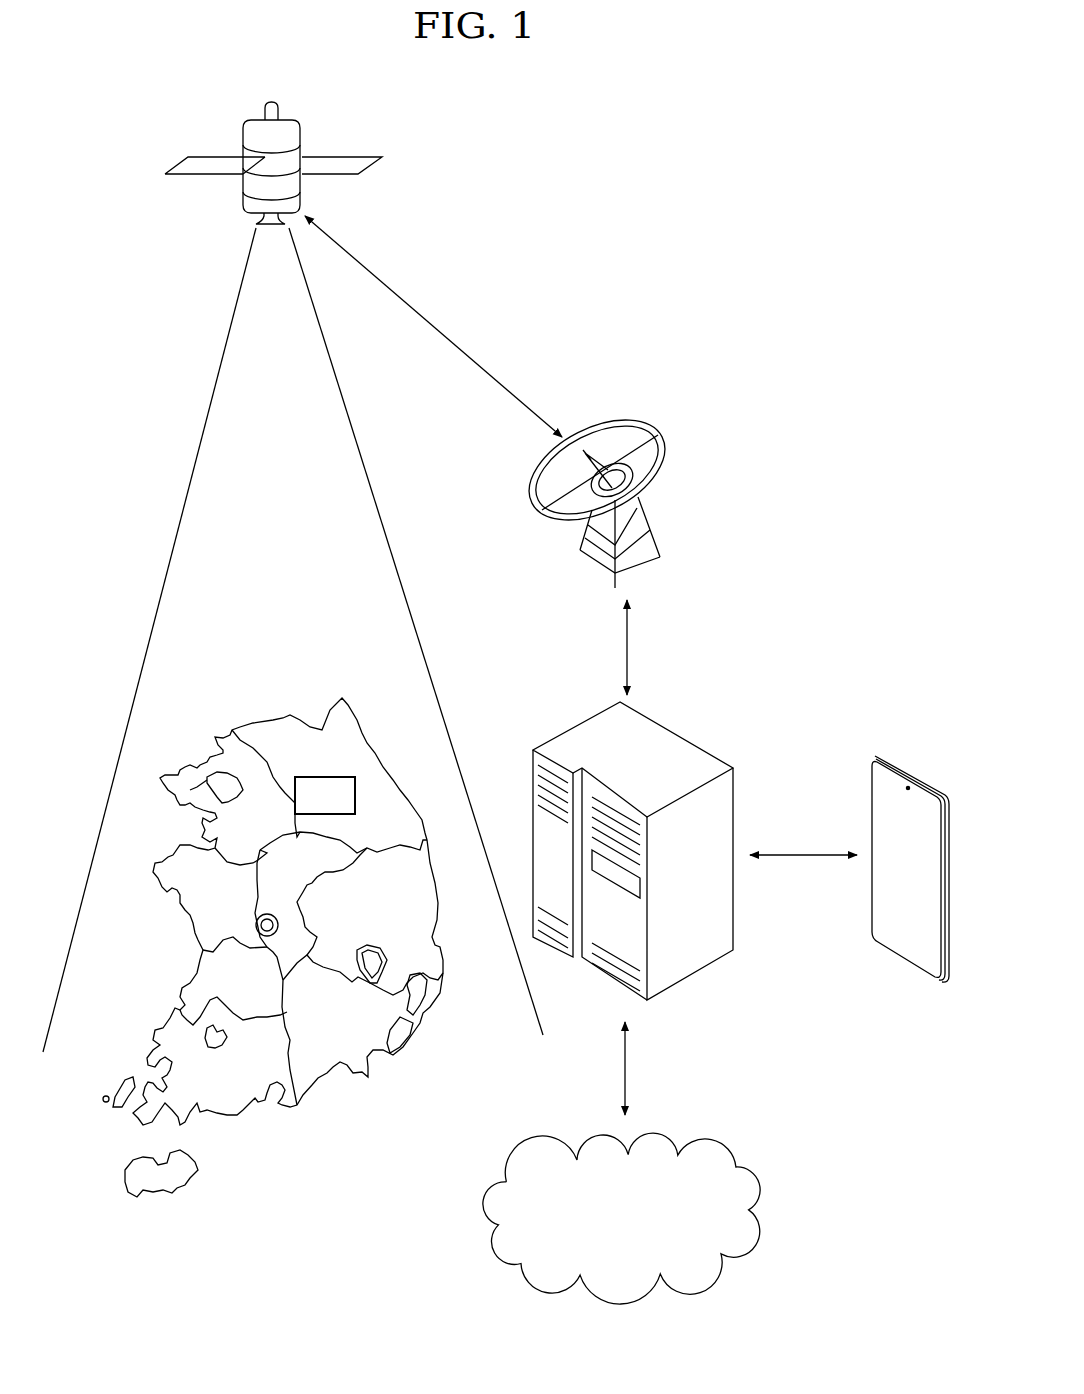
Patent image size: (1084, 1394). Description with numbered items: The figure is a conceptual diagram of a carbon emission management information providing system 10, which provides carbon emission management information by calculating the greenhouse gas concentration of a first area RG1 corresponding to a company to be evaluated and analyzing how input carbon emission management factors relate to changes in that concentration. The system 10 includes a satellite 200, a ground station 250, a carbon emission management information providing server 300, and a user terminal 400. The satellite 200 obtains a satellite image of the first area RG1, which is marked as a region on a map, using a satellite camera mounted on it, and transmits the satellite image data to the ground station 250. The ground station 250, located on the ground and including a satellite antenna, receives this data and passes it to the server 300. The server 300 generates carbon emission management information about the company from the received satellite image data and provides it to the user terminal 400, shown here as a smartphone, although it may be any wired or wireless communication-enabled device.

The carbon emission management information providing system 10 is at (713, 136).
The satellite 200 is at (293, 138).
The ground station 250 is at (637, 435).
The carbon emission management information providing server 300 is at (683, 757).
The user terminal 400 is at (902, 770).
The first area RG1 is at (337, 773).